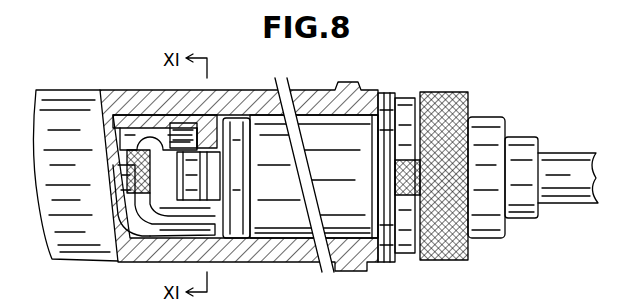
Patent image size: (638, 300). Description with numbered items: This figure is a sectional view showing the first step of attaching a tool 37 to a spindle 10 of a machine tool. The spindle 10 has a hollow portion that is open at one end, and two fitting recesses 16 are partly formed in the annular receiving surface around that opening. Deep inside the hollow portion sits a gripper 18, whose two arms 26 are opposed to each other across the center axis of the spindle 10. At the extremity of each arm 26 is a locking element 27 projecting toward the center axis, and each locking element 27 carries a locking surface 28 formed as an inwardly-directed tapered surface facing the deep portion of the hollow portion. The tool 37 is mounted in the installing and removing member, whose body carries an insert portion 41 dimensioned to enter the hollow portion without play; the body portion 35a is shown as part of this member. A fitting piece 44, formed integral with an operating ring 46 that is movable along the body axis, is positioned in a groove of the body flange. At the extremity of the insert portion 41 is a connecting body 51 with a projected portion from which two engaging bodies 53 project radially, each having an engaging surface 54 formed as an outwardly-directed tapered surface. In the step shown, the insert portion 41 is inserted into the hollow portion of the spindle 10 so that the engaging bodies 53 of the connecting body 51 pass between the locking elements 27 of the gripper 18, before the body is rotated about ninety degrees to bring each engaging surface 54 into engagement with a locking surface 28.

The spindle 10 is at (58, 90).
The gripper 18 is at (128, 113).
The arm 26 is at (163, 137).
The locking surface 28 is at (190, 140).
The locking element 27 is at (229, 98).
The insert portion 41 is at (318, 125).
The fitting recess 16 is at (388, 92).
The fitting piece 44 is at (401, 108).
The operating ring 46 is at (462, 92).
The plug body 35a is at (496, 117).
The tool 37 is at (570, 153).
The connecting body 51 is at (113, 260).
The engaging body 53 is at (190, 182).
The engaging surface 54 is at (210, 182).